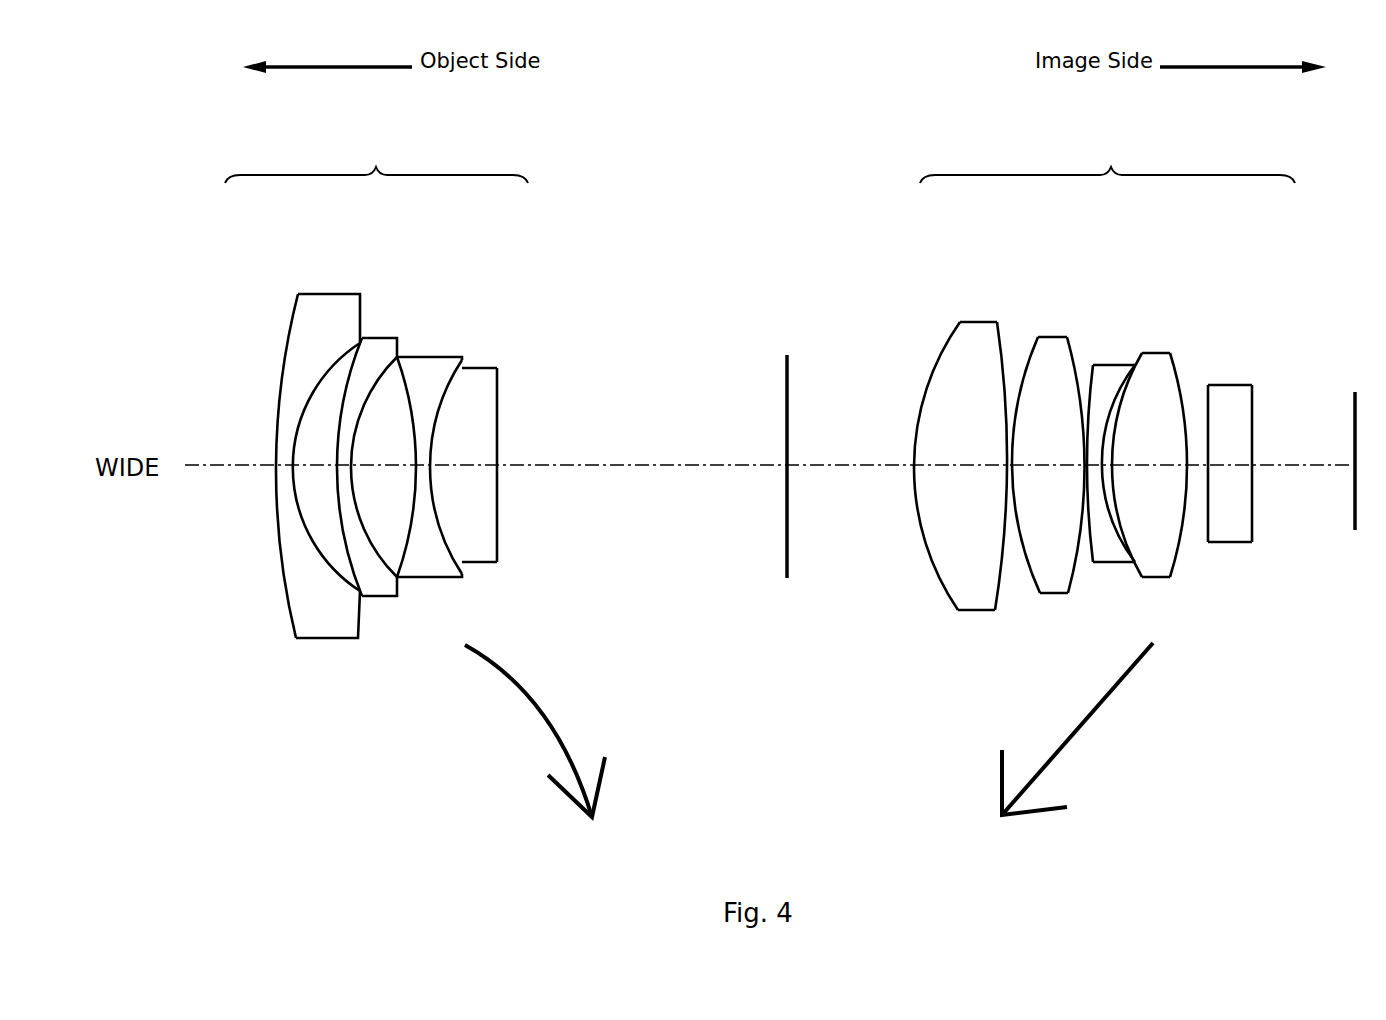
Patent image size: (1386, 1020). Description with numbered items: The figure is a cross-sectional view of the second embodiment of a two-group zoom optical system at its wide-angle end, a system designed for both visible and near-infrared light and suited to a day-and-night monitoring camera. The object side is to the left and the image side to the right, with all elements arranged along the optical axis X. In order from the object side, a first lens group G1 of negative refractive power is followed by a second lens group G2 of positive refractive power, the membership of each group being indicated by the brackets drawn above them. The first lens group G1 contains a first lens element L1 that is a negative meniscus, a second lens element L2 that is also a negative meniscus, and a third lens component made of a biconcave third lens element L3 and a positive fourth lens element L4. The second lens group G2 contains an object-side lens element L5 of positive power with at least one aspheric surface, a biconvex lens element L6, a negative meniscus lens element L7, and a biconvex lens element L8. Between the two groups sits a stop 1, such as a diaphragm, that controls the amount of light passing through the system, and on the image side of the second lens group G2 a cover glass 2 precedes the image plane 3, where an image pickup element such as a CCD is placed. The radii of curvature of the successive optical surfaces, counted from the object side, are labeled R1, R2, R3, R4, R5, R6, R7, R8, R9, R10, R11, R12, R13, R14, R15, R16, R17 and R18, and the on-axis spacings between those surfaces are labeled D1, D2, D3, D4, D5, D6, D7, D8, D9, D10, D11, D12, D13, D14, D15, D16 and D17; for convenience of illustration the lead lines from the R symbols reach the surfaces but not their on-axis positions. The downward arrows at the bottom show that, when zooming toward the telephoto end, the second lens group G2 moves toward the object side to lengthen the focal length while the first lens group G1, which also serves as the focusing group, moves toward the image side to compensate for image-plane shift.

The stop 1 is at (787, 355).
The cover glass 2 is at (1236, 388).
The image plane 3 is at (1355, 408).
The optical axis X is at (213, 470).
The first lens group G1 is at (384, 406).
The second lens group G2 is at (1079, 394).
The first lens element L1 is at (310, 294).
The second lens element L2 is at (375, 338).
The third lens element L3 is at (440, 365).
The fourth lens element L4 is at (477, 370).
The object-side lens element L5 is at (975, 322).
The biconvex lens element L6 is at (1054, 338).
The lens element L7 is at (1128, 365).
The biconvex lens element L8 is at (1165, 355).
The radius of curvature R1 is at (285, 336).
The radius of curvature R2 is at (295, 443).
The radius of curvature R3 is at (338, 390).
The radius of curvature R4 is at (355, 451).
The radius of curvature R5 is at (412, 418).
The radius of curvature R6 is at (433, 452).
The radius of curvature R7 is at (498, 436).
The radius of curvature R8 is at (785, 407).
The radius of curvature R9 is at (913, 410).
The radius of curvature R10 is at (1012, 378).
The radius of curvature R11 is at (1025, 378).
The radius of curvature R12 is at (1085, 418).
The radius of curvature R13 is at (1090, 410).
The radius of curvature R14 is at (1108, 405).
The radius of curvature R15 is at (1114, 433).
The radius of curvature R16 is at (1188, 388).
The radius of curvature R17 is at (1208, 405).
The radius of curvature R18 is at (1252, 430).
The on-axis surface spacing D1 is at (278, 540).
The on-axis surface spacing D2 is at (318, 470).
The on-axis surface spacing D3 is at (343, 470).
The on-axis surface spacing D4 is at (417, 470).
The on-axis surface spacing D5 is at (427, 470).
The on-axis surface spacing D6 is at (462, 470).
The on-axis surface spacing D7 is at (640, 470).
The on-axis surface spacing D8 is at (856, 470).
The on-axis surface spacing D9 is at (950, 470).
The on-axis surface spacing D10 is at (1008, 470).
The on-axis surface spacing D11 is at (1043, 470).
The on-axis surface spacing D12 is at (1085, 470).
The on-axis surface spacing D13 is at (1102, 470).
The on-axis surface spacing D14 is at (1113, 470).
The on-axis surface spacing D15 is at (1148, 470).
The on-axis surface spacing D16 is at (1199, 470).
The on-axis surface spacing D17 is at (1225, 470).